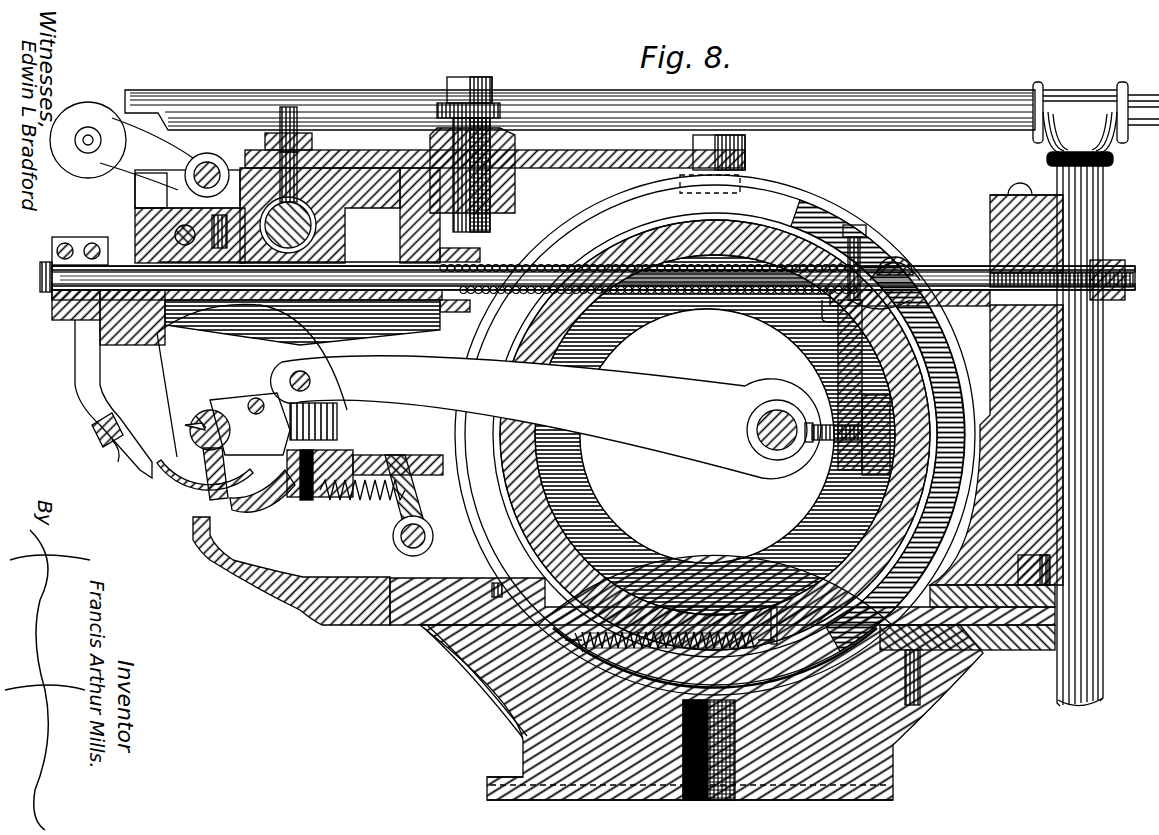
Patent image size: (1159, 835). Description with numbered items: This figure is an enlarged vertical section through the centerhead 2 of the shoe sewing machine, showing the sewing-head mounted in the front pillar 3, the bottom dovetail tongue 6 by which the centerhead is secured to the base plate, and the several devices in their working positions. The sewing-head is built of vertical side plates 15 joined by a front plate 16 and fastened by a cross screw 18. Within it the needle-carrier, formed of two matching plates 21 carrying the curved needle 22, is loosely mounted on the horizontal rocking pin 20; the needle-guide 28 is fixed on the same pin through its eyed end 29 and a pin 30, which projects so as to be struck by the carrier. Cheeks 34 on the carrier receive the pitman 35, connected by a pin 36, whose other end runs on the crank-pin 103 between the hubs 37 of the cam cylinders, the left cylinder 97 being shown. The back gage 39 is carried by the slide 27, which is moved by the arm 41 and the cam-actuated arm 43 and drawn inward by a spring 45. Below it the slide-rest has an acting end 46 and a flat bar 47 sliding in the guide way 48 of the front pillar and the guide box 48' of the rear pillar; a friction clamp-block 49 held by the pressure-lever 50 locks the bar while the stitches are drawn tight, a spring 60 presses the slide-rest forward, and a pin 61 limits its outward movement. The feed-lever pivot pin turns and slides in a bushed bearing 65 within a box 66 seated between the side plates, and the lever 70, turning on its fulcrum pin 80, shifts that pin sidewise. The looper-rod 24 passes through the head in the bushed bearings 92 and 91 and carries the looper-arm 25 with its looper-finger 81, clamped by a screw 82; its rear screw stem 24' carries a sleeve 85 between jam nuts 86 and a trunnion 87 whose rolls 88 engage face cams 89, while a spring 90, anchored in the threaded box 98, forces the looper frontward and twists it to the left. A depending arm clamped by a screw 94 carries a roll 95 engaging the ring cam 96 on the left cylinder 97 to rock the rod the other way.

The ring 2 is at (715, 667).
The front pillar 3 is at (698, 677).
The bottom dovetail tongue 6 is at (487, 790).
The vertical side plates 15 is at (298, 378).
The front plate 16 is at (135, 225).
The cross screw 18 is at (201, 235).
The horizontal rocking pin 20 is at (190, 437).
The matching plates 21 is at (250, 424).
The curved needle 22 is at (185, 494).
The rock rod 24 is at (587, 260).
The screw stem 24' is at (1115, 266).
The looper 25 is at (75, 370).
The back gage slide 27 is at (365, 465).
The needle-guide 28 is at (208, 476).
The eyed end 29 is at (191, 408).
The pin 30 is at (185, 425).
The cheeks 34 is at (313, 421).
The pitman 35 is at (546, 417).
The pin 36 is at (312, 381).
The hubs 37 is at (715, 435).
The back gage 39 is at (262, 499).
The arm 41 is at (408, 505).
The arm 43 is at (838, 330).
The spring 45 is at (362, 501).
The acting end 46 is at (193, 530).
The flat bar 47 is at (722, 601).
The guide way 48 is at (453, 682).
The guide box 48' is at (967, 665).
The friction clamp-block 49 is at (992, 595).
The pressure-lever 50 is at (1050, 570).
The spring 60 is at (671, 638).
The pin 61 is at (497, 582).
The bushed bearing 65 is at (297, 202).
The box 66 is at (320, 215).
The lever 70 is at (580, 129).
The fulcrum pin 80 is at (468, 143).
The looper-finger 81 is at (128, 452).
The screw 82 is at (92, 243).
The sleeve 85 is at (981, 277).
The jam nuts 86 is at (1108, 300).
The trunnion 87 is at (895, 258).
The friction rolls 88 is at (920, 262).
The face cams 89 is at (715, 435).
The spring 90 is at (650, 268).
The bush bearing 91 is at (1026, 228).
The bushed bearing 92 is at (108, 317).
The screw 94 is at (857, 236).
The friction roll 95 is at (876, 476).
The ring cam 96 is at (715, 435).
The left cam cylinder 97 is at (540, 522).
The threaded box 98 is at (457, 220).
The crank-pin 103 is at (759, 422).